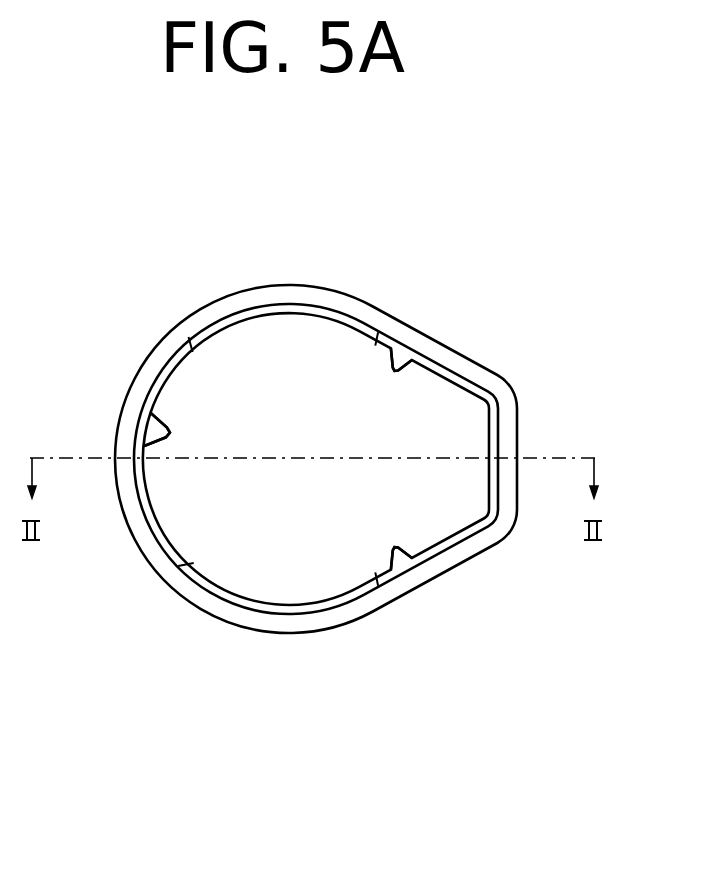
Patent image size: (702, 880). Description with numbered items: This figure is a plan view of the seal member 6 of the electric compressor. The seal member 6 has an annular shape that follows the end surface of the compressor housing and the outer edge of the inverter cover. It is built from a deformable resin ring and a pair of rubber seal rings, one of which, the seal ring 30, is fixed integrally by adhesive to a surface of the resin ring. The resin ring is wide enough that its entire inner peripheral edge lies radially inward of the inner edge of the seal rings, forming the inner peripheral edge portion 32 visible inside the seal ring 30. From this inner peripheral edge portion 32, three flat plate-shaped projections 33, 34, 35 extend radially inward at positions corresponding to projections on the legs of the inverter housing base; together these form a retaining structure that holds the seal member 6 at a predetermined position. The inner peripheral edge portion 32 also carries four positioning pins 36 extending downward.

The seal member 6 is at (456, 300).
The rubber seal ring 30 is at (322, 290).
The inner peripheral edge portion 32 is at (247, 319).
The projection 33 is at (170, 431).
The projection 34 is at (395, 372).
The projection 35 is at (395, 546).
The positioning pin 36 is at (184, 333).